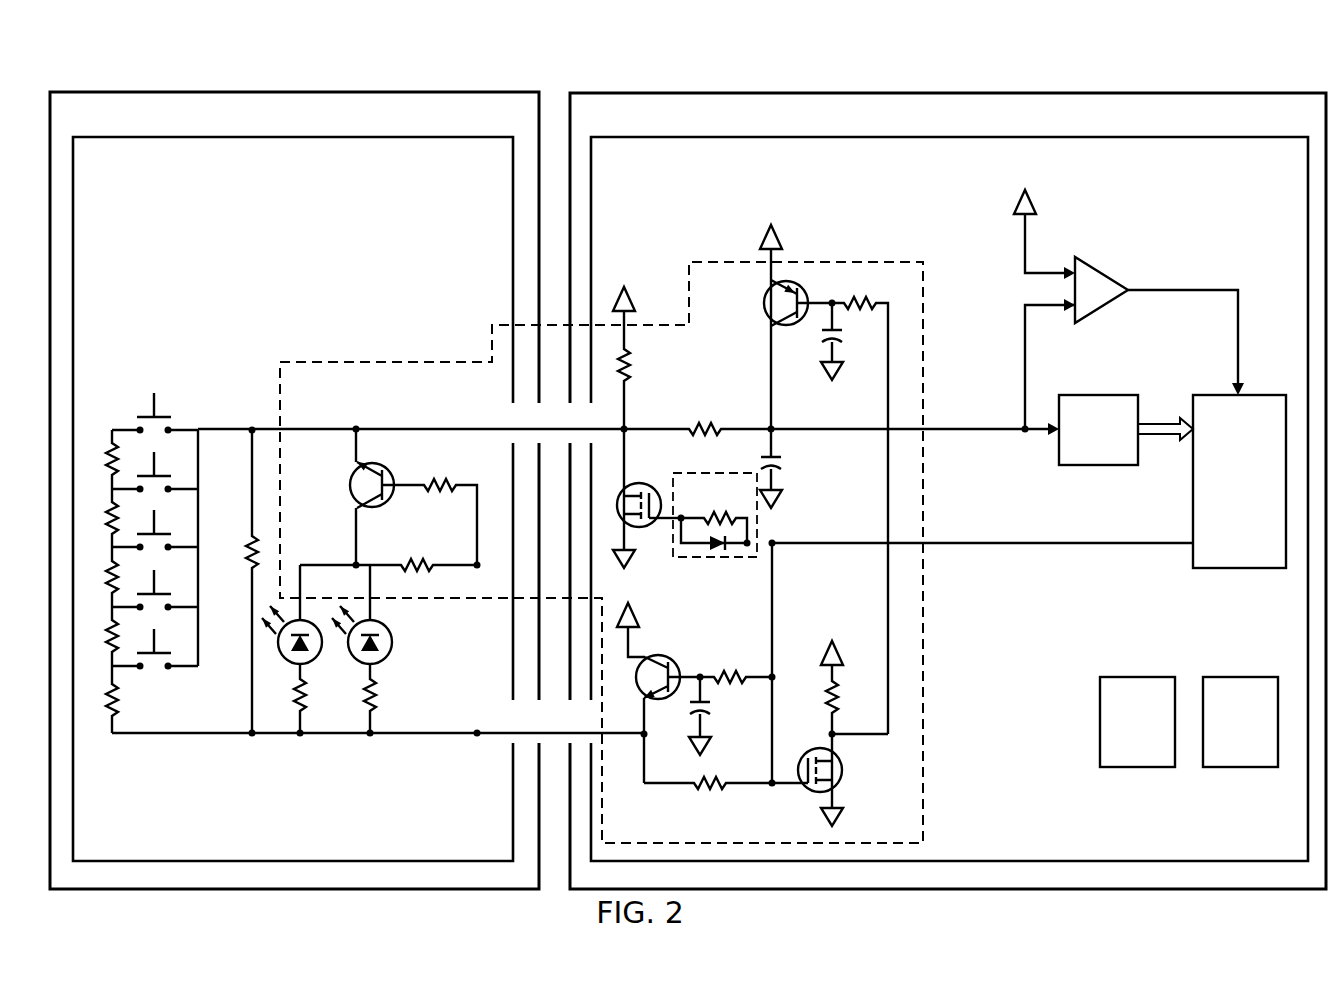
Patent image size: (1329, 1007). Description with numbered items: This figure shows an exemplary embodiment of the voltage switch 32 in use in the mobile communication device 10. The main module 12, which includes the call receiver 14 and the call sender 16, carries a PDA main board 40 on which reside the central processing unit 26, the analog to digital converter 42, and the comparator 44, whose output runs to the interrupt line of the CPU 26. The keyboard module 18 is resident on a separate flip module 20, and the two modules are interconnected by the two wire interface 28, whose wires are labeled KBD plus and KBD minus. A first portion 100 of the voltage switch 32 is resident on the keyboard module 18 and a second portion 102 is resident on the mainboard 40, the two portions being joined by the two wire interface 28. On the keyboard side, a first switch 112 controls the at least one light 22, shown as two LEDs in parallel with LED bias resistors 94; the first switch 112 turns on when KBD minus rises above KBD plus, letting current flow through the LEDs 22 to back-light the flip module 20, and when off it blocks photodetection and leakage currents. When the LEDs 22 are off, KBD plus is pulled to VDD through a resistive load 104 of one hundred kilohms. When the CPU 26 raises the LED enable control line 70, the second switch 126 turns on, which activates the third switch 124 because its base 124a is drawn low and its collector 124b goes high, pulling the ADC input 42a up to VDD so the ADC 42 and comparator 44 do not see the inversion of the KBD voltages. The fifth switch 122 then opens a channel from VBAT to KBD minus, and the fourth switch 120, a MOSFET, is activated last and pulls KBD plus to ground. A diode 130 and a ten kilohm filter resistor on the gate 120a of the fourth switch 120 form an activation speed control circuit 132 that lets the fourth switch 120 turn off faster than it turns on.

The mobile communication device 10 is at (1285, 62).
The main module 12 is at (738, 93).
The call receiver 14 is at (1130, 677).
The call sender 16 is at (1240, 677).
The keyboard module 18 is at (253, 137).
The flip module 20 is at (152, 92).
The light 22 is at (312, 662).
The central processing unit 26 is at (1193, 475).
The two wire interface 28 is at (425, 429).
The voltage switch 32 is at (322, 360).
The main board 40 is at (838, 137).
The analog to digital converter 42 is at (1074, 417).
The ADC input 42a is at (1055, 436).
The comparator 44 is at (1094, 263).
The CPU control line 70 is at (1133, 546).
The LED bias resistor 94 is at (378, 708).
The first portion 100 is at (371, 555).
The second portion 102 is at (749, 512).
The resistive load 104 is at (632, 356).
The first switch 112 is at (352, 500).
The fourth switch 120 is at (648, 483).
The gate 120a is at (657, 525).
The fifth switch 122 is at (668, 655).
The third switch 124 is at (794, 339).
The base 124a is at (805, 290).
The collector 124b is at (780, 328).
The second switch 126 is at (808, 790).
The diode 130 is at (718, 552).
The activation speed control circuit 132 is at (722, 546).